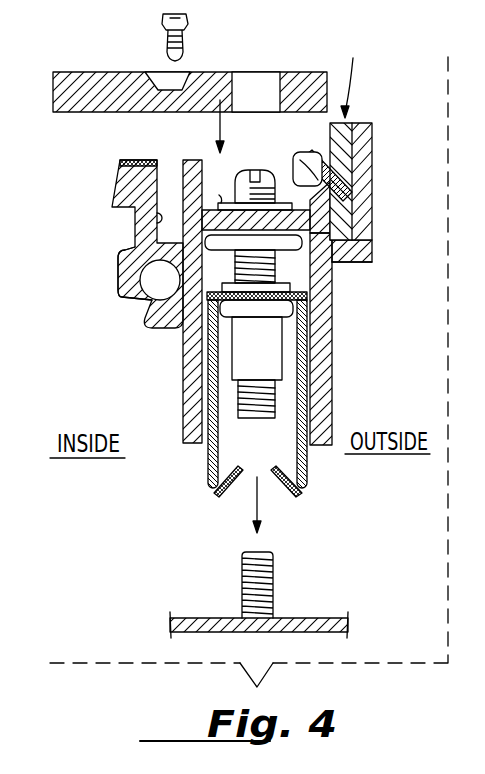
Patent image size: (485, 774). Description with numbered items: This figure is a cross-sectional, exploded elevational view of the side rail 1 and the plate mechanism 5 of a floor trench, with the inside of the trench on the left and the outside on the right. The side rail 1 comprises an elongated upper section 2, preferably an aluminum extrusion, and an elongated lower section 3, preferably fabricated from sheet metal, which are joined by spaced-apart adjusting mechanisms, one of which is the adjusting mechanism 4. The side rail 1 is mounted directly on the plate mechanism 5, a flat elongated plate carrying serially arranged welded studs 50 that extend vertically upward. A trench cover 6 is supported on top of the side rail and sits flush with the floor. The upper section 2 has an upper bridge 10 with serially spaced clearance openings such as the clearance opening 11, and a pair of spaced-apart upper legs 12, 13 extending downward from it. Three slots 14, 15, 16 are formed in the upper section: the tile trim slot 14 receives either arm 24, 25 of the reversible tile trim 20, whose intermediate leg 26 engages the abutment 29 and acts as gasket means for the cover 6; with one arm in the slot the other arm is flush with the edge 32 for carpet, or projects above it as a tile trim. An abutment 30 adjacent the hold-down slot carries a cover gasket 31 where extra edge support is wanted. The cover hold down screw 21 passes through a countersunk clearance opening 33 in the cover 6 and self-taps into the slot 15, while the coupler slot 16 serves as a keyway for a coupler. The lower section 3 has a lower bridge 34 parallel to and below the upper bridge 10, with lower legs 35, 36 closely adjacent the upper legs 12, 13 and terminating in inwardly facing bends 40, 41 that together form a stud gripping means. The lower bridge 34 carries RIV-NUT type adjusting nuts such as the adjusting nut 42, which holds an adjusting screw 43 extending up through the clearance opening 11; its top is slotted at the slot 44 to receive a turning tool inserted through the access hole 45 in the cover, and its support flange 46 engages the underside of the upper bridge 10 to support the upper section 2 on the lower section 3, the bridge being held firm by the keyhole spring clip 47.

The side rail 1 is at (380, 73).
The upper section 2 is at (386, 239).
The lower section 3 is at (297, 392).
The adjusting mechanism 4 is at (323, 289).
The plate mechanism 5 is at (155, 606).
The trench cover 6 is at (190, 86).
The upper bridge 10 is at (358, 263).
The clearance opening 11 is at (253, 261).
The upper leg 12 is at (192, 383).
The upper leg 13 is at (331, 397).
The tile trim slot 14 is at (365, 206).
The slot 15 is at (156, 219).
The coupler slot 16 is at (160, 302).
The reversible tile trim 20 is at (353, 76).
The cover hold down screw 21 is at (163, 26).
The arm 24 is at (344, 209).
The arm 25 is at (382, 157).
The intermediate leg 26 is at (305, 158).
The abutment 29 is at (328, 165).
The abutment 30 is at (121, 168).
The cover gasket 31 is at (148, 160).
The edge 32 is at (341, 143).
The countersunk clearance opening 33 is at (184, 89).
The lower bridge 34 is at (302, 308).
The lower leg 35 is at (211, 454).
The lower leg 36 is at (305, 458).
The bend 40 is at (218, 489).
The bend 41 is at (293, 489).
The adjusting nut 42 is at (268, 368).
The adjusting screw 43 is at (253, 401).
The slot 44 is at (253, 172).
The access hole 45 is at (278, 93).
The support flange 46 is at (262, 271).
The keyhole spring clip 47 is at (220, 187).
The stud 50 is at (273, 593).